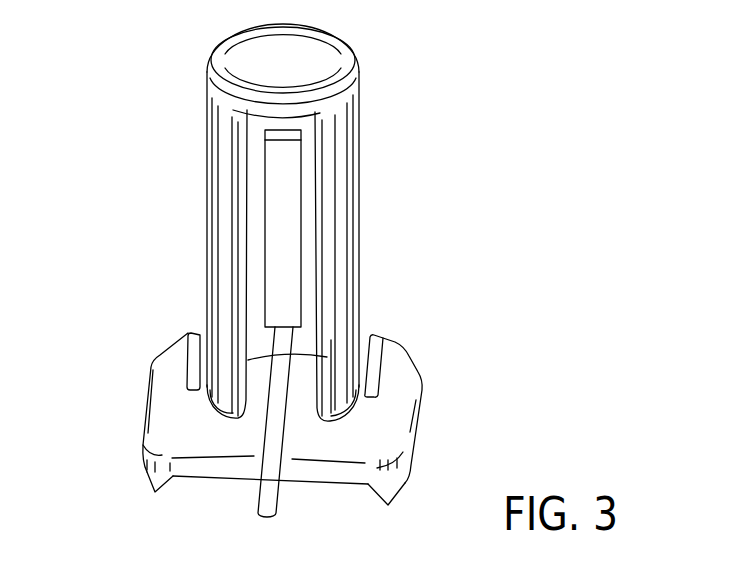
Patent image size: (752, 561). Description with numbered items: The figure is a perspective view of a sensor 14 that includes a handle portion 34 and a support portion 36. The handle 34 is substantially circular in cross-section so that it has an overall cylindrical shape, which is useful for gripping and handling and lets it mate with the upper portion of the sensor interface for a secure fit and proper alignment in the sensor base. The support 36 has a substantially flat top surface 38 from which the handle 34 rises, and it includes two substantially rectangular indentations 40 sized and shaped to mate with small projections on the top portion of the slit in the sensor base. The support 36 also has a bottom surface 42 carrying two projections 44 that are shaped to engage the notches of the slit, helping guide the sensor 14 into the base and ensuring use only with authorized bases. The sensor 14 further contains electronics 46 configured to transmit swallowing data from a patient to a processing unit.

The sensor 14 is at (404, 57).
The handle portion 34 is at (350, 193).
The support portion 36 is at (167, 425).
The top surface 38 is at (383, 433).
The indentation 40 is at (197, 347).
The bottom surface 42 is at (220, 477).
The projection 44 is at (157, 487).
The electronics 46 is at (278, 438).